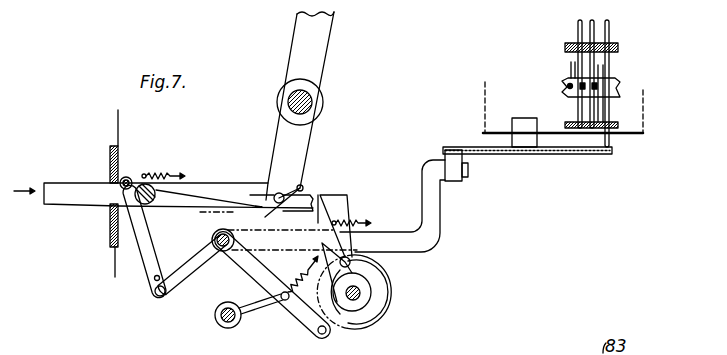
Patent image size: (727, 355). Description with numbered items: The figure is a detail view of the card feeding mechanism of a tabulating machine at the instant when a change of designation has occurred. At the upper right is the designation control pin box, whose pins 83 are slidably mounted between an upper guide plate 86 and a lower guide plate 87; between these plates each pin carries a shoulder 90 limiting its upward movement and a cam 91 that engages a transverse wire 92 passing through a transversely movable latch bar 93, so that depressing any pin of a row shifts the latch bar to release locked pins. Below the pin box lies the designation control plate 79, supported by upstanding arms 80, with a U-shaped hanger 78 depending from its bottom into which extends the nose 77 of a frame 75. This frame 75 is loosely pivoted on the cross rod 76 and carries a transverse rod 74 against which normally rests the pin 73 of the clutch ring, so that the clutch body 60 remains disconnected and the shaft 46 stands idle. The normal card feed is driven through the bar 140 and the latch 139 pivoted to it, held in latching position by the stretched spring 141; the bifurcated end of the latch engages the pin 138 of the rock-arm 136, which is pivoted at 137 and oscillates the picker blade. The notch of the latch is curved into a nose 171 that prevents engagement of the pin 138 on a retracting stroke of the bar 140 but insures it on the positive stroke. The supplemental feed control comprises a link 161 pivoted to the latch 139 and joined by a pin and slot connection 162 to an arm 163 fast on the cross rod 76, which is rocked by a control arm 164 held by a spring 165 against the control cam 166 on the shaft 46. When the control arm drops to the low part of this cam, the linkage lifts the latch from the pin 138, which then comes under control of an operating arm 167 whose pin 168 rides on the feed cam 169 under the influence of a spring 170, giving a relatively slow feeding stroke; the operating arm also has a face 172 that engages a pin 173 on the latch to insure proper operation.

The shaft 46 is at (360, 293).
The clutch body 60 is at (387, 282).
The pin 73 is at (349, 241).
The transverse rod 74 is at (355, 232).
The frame 75 is at (423, 235).
The cross rod 76 is at (214, 234).
The nose 77 is at (468, 170).
The U-shaped hanger 78 is at (445, 157).
The designation control plate 79 is at (559, 154).
The arms 80 is at (524, 119).
The pins 83 is at (609, 25).
The upper guide plate 86 is at (618, 47).
The lower guide plate 87 is at (618, 125).
The shoulder 90 is at (603, 63).
The cam 91 is at (572, 68).
The transverse wire 92 is at (563, 79).
The latch bar 93 is at (620, 85).
The rock-arm 136 is at (318, 43).
The pivot 137 is at (312, 102).
The pin 138 is at (302, 183).
The latch 139 is at (245, 190).
The bar 140 is at (74, 197).
The spring 141 is at (160, 175).
The link 161 is at (149, 261).
The pin and slot connection 162 is at (156, 291).
The arm 163 is at (190, 273).
The control arm 164 is at (250, 263).
The spring 165 is at (257, 310).
The control cam 166 is at (343, 312).
The operating arm 167 is at (255, 312).
The pin 168 is at (373, 257).
The feed cam 169 is at (378, 305).
The spring 170 is at (346, 218).
The nose 171 is at (276, 207).
The face 172 is at (340, 203).
The pin 173 is at (304, 189).